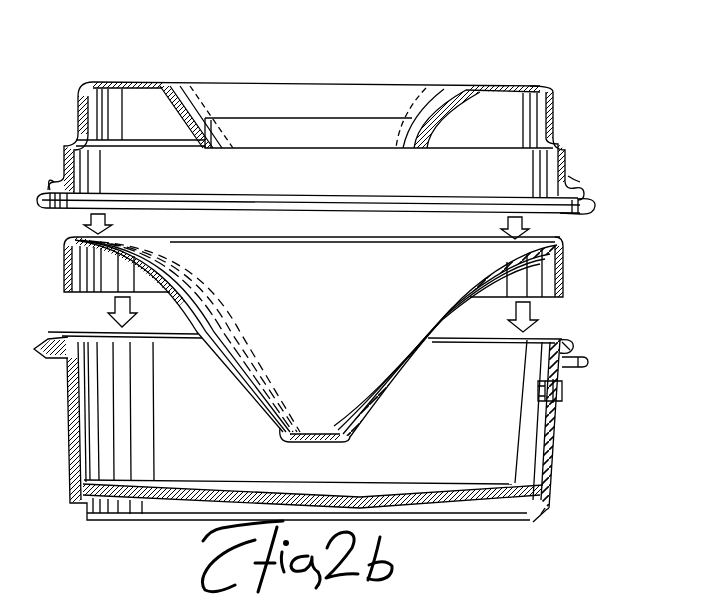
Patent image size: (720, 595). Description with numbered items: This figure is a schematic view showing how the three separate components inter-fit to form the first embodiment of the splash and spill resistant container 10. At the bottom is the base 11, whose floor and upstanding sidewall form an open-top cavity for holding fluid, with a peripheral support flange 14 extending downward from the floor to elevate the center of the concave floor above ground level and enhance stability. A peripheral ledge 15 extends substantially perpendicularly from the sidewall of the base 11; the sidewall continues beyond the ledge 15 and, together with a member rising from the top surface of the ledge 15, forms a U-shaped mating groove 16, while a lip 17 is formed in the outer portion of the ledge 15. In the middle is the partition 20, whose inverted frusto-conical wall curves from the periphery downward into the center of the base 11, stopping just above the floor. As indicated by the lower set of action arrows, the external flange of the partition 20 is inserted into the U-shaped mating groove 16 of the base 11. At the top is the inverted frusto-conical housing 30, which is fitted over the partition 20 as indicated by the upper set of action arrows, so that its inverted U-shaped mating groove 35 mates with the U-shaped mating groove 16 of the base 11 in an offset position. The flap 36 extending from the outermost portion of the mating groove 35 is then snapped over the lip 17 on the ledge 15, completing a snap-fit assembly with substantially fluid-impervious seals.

The splash and spill resistant container 10 is at (501, 68).
The inverted frusto-conical housing 30 is at (552, 110).
The inverted U-shaped mating groove 35 is at (585, 182).
The flap 36 is at (597, 214).
The partition 20 is at (567, 278).
The U-shaped mating groove 16 is at (567, 343).
The lip 17 is at (580, 362).
The peripheral ledge 15 is at (577, 368).
The base 11 is at (552, 463).
The peripheral support flange 14 is at (535, 520).